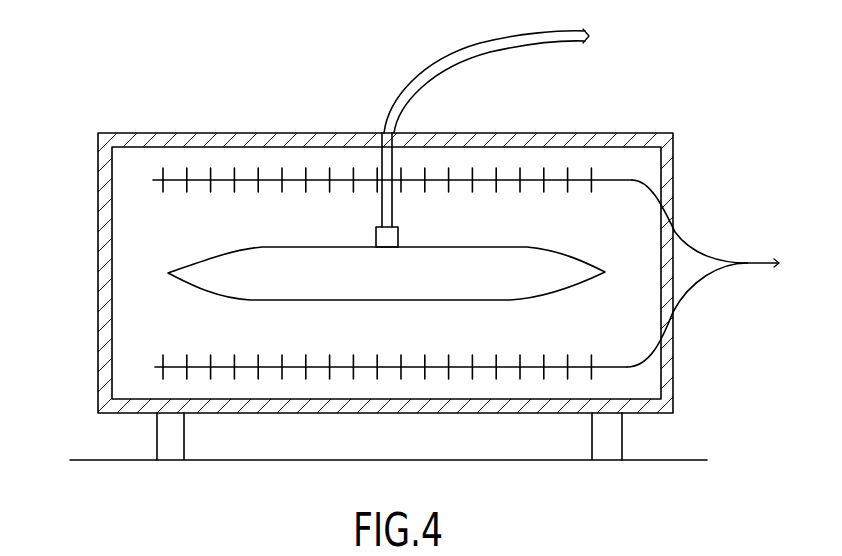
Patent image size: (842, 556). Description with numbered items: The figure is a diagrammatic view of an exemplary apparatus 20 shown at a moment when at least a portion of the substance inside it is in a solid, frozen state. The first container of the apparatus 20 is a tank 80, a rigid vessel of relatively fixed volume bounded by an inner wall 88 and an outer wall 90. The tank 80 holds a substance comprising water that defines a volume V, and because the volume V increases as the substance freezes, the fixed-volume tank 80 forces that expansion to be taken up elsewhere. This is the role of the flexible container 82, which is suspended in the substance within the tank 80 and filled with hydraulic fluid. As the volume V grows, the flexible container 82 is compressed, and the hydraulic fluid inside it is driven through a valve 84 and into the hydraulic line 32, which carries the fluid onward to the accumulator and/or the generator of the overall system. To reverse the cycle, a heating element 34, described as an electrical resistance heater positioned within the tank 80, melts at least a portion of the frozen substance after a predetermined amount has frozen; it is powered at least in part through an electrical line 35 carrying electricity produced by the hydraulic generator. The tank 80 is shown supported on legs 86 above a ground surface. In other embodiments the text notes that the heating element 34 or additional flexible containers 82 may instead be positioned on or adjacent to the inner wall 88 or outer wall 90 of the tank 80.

The apparatus 20 is at (148, 63).
The hydraulic line 32 is at (423, 70).
The heating element 34 is at (557, 167).
The electrical line 35 is at (755, 262).
The tank 80 is at (103, 267).
The flexible container 82 is at (262, 247).
The valve 84 is at (378, 238).
The support legs 86 is at (160, 432).
The inner wall 88 is at (120, 340).
The outer wall 90 is at (98, 338).
The volume V is at (137, 228).